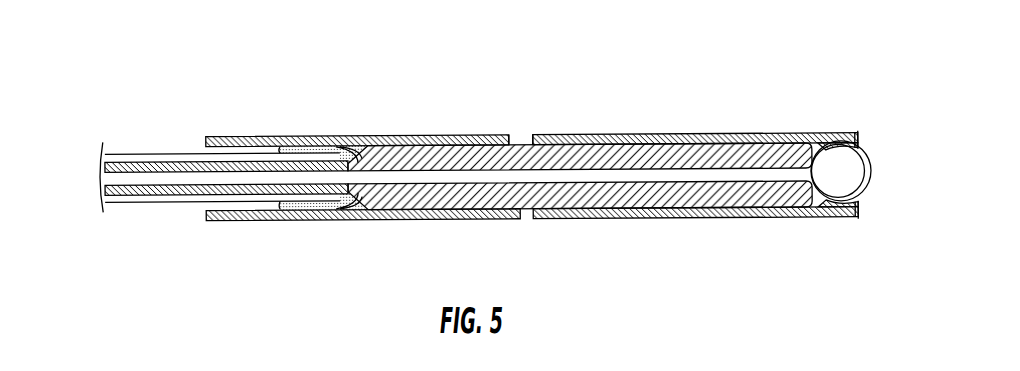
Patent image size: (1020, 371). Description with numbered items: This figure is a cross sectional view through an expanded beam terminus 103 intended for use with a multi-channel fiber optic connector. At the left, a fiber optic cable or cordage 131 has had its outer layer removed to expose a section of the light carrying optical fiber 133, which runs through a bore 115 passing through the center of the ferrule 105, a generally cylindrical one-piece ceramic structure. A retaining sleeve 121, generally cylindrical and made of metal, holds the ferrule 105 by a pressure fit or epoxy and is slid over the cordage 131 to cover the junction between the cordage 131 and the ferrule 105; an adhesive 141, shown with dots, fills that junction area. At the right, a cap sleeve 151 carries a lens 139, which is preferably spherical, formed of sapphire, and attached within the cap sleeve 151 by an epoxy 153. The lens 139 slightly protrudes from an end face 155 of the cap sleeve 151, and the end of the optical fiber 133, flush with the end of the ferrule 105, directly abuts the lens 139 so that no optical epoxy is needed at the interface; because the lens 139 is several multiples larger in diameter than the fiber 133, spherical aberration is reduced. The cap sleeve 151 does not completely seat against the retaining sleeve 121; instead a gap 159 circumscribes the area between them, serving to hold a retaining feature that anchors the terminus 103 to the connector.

The expanded beam terminus 103 is at (376, 78).
The ferrule 105 is at (630, 207).
The bore 115 is at (588, 183).
The retaining sleeve 121 is at (413, 134).
The fiber optic cable or cordage 131 is at (141, 144).
The light carrying optical fiber 133 is at (98, 176).
The lens 139 is at (858, 172).
The adhesive 141 is at (303, 210).
The cap sleeve 151 is at (734, 214).
The epoxy 153 is at (822, 138).
The end face 155 is at (858, 135).
The gap 159 is at (527, 121).